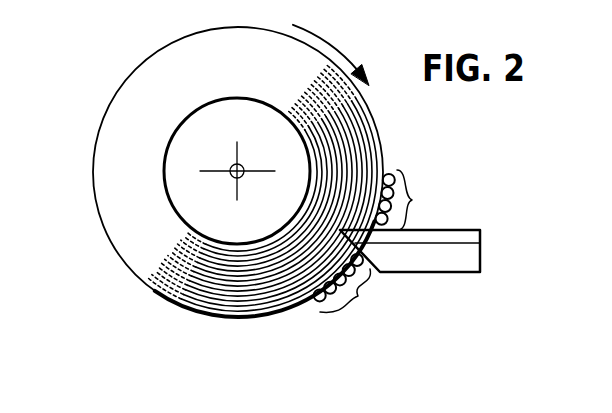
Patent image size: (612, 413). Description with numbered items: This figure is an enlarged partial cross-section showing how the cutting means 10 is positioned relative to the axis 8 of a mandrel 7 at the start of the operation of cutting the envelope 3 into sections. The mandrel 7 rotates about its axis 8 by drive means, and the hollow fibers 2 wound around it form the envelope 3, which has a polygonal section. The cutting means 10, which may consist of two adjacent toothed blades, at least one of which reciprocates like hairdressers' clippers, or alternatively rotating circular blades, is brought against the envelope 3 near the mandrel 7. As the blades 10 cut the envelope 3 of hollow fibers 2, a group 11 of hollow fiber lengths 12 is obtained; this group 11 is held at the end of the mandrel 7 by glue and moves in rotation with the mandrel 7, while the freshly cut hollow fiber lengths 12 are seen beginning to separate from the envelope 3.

The hollow fiber 2 is at (395, 176).
The envelope 3 is at (413, 200).
The mandrel 7 is at (130, 91).
The axis 8 is at (232, 165).
The cutting means 10 is at (462, 253).
The group of hollow fiber lengths 11 is at (354, 294).
The hollow fiber length 12 is at (316, 303).